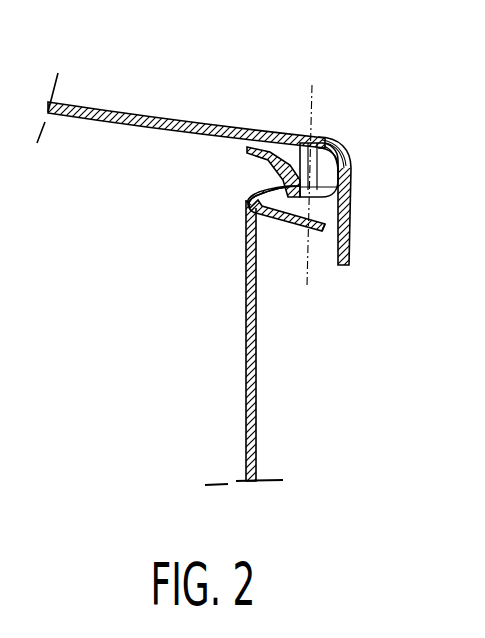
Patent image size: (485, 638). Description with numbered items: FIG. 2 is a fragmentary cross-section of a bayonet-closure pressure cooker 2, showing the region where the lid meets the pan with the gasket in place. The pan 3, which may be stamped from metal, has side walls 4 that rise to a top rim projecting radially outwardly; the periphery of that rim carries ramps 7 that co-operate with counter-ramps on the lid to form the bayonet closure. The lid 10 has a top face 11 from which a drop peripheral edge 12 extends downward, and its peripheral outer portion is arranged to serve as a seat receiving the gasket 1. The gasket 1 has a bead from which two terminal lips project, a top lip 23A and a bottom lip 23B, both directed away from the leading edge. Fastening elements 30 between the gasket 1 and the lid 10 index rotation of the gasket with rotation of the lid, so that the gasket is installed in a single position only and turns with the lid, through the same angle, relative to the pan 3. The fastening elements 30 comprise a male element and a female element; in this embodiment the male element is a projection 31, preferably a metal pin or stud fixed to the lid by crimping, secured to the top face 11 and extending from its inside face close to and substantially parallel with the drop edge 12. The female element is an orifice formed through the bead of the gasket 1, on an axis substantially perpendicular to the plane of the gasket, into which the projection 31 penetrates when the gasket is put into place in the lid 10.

The lid 10 is at (110, 96).
The top face 11 is at (203, 124).
The gasket 1 is at (289, 133).
The fastening elements 30 is at (332, 137).
The projection 31 is at (349, 158).
The drop peripheral edge 12 is at (350, 222).
The top lip 23A is at (257, 143).
The bottom lip 23B is at (246, 198).
The ramps 7 is at (323, 225).
The side walls 4 is at (258, 342).
The pan 3 is at (264, 427).
The pressure cooker 2 is at (206, 356).